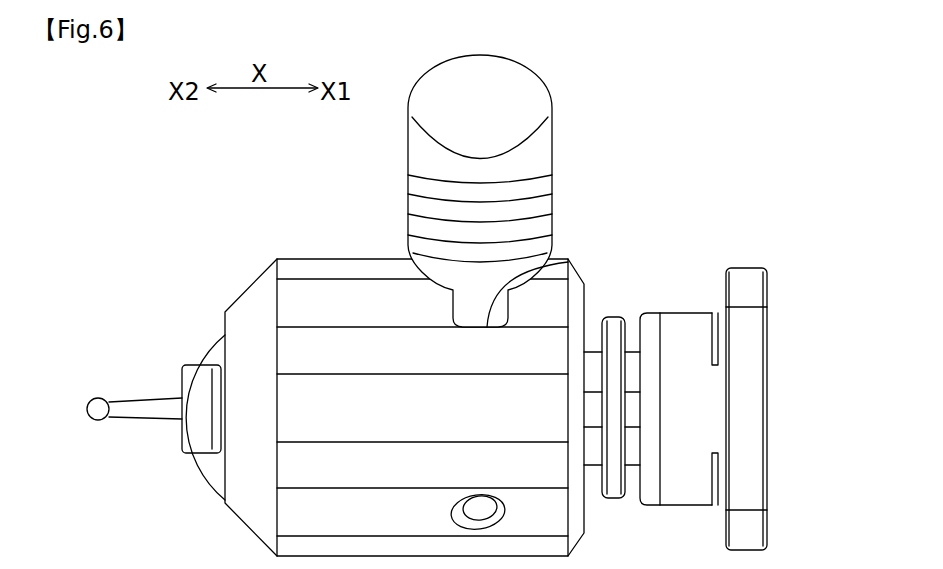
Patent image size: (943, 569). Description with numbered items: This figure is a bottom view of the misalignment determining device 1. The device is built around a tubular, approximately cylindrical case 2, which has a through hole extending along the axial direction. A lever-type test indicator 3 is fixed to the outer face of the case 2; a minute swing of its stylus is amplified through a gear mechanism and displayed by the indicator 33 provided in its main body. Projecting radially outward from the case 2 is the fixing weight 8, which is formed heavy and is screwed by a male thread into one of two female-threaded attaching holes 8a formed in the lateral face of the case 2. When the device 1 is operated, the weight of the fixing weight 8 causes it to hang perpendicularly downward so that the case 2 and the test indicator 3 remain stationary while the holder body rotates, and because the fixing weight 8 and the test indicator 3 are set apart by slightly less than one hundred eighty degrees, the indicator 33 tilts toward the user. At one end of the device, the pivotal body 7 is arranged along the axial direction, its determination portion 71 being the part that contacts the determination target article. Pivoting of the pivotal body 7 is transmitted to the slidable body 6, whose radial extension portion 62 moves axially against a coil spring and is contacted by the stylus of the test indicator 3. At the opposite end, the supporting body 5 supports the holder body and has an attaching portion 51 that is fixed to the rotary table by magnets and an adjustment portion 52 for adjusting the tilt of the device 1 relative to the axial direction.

The misalignment determining device 1 is at (688, 127).
The case 2 is at (340, 256).
The test indicator 3 is at (211, 471).
The indicator 33 is at (205, 360).
The pivotal body 7 is at (180, 377).
The determination portion 71 is at (101, 398).
The fixing weight 8 is at (553, 134).
The attaching hole 8a is at (569, 262).
The slidable body 6 is at (593, 468).
The radial extension portion 62 is at (614, 322).
The adjustment portion 52 is at (694, 313).
The attaching portion 51 is at (745, 278).
The supporting body 5 is at (770, 379).